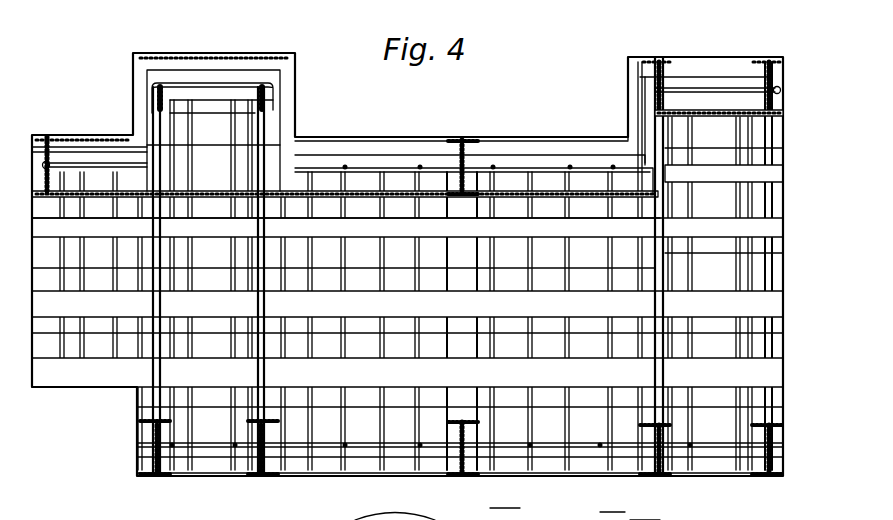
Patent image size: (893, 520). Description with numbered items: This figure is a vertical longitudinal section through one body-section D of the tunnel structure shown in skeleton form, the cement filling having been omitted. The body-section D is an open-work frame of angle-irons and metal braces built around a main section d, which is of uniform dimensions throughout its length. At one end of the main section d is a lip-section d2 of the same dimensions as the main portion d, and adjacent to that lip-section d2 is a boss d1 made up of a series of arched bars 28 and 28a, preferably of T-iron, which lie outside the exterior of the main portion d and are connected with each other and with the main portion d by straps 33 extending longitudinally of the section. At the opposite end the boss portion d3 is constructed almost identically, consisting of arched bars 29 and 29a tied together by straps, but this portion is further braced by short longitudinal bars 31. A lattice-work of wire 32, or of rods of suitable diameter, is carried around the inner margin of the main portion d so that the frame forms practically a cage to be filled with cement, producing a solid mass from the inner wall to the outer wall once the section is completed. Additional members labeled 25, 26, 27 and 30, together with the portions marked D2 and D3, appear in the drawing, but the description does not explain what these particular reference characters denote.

The bolt rail 25 is at (48, 135).
The lower rail 26 is at (472, 492).
The horizontal beams 27 is at (407, 302).
The arched bar 28 is at (161, 52).
The arched bar 28a is at (150, 420).
The arched bar 29 is at (658, 57).
The arched bar 29a is at (664, 110).
The cross member 30 is at (182, 192).
The short longitudinal bar 31 is at (724, 268).
The lattice-work of wire 32 is at (96, 268).
The strap 33 is at (214, 65).
The main section d is at (416, 137).
The boss d1 is at (259, 53).
The lip-section d2 is at (104, 135).
The boss portion d3 is at (735, 57).
The body-section D is at (338, 133).
The frame section D2 is at (395, 506).
The frame section D3 is at (318, 509).